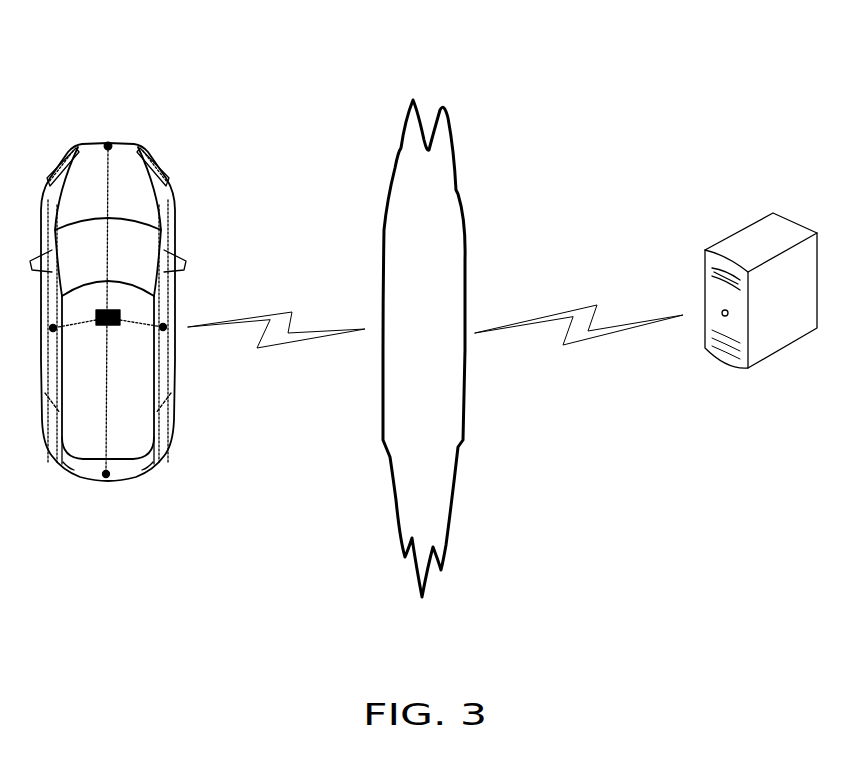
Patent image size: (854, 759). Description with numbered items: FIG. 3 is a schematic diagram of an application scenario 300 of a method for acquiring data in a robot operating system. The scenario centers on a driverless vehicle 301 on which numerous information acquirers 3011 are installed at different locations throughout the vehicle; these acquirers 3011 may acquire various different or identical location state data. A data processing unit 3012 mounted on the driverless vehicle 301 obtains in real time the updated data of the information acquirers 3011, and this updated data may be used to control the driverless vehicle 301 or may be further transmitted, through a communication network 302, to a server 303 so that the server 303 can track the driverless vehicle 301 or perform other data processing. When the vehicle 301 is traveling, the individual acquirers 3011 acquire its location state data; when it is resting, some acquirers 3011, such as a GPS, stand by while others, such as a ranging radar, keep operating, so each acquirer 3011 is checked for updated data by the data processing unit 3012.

The vehicle communication system 300 is at (784, 54).
The driverless vehicle 301 is at (176, 205).
The information acquirers 3011 is at (110, 144).
The data processing unit 3012 is at (120, 312).
The communication network 302 is at (466, 233).
The server 303 is at (743, 368).